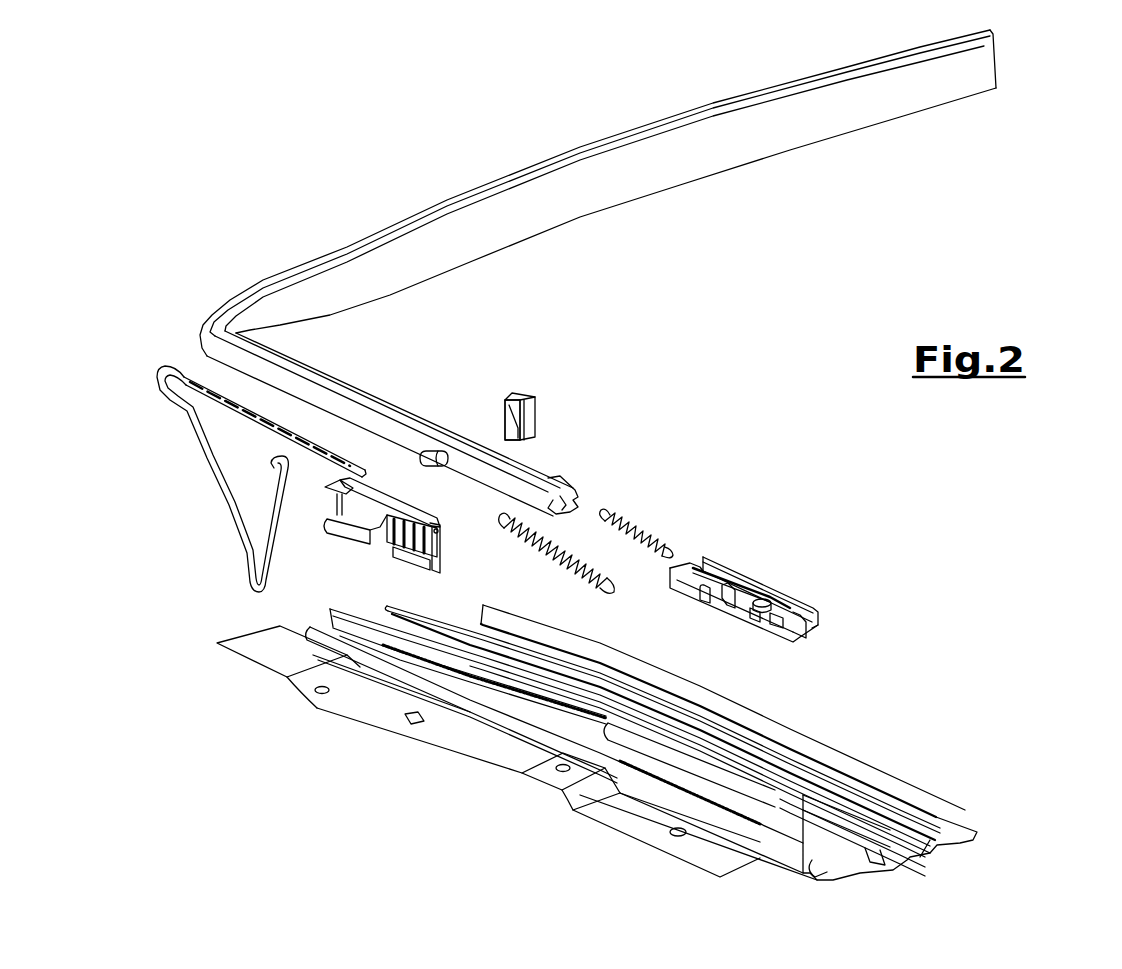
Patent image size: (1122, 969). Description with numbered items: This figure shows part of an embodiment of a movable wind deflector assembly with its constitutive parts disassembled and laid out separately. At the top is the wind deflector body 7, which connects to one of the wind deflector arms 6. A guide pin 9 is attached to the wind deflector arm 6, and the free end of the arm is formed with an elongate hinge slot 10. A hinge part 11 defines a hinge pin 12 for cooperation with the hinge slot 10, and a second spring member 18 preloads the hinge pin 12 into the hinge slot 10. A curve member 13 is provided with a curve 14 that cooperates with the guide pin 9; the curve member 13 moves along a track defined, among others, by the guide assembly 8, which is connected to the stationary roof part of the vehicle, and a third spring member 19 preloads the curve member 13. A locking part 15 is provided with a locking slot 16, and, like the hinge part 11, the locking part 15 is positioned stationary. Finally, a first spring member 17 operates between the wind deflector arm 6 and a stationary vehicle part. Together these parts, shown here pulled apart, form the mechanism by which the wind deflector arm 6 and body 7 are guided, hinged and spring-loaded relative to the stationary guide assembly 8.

The wind deflector arm 6 is at (360, 400).
The wind deflector body 7 is at (598, 186).
The guide assembly 8 is at (820, 752).
The guide pin 9 is at (431, 462).
The elongate hinge slot 10 is at (552, 512).
The hinge part 11 is at (698, 583).
The hinge pin 12 is at (718, 576).
The curve member 13 is at (358, 512).
The curve 14 is at (379, 493).
The locking part 15 is at (515, 393).
The locking slot 16 is at (510, 416).
The first spring member 17 is at (207, 463).
The second spring member 18 is at (640, 523).
The third spring member 19 is at (545, 549).